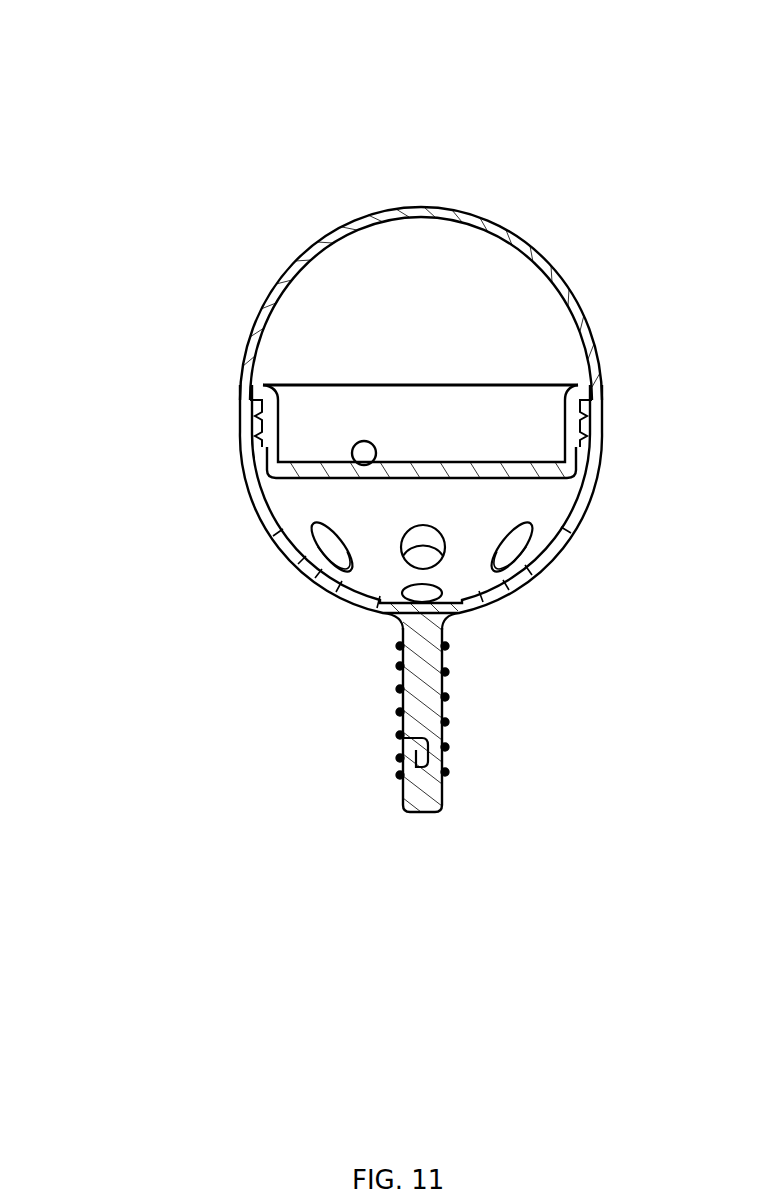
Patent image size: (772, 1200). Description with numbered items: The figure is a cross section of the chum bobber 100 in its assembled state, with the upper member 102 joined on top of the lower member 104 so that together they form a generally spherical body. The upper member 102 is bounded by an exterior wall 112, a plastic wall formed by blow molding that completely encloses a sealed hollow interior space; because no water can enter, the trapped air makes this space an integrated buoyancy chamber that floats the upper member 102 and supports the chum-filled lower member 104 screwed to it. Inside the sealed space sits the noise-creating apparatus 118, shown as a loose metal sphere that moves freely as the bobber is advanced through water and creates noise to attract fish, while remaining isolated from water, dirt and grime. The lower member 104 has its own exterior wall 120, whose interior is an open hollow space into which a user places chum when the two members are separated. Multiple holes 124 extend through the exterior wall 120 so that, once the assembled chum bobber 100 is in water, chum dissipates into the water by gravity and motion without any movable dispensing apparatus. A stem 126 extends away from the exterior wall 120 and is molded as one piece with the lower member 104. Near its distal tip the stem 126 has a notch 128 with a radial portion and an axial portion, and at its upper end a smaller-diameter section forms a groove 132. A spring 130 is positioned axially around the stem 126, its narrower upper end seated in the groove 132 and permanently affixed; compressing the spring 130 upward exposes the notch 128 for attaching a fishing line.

The chum bobber 100 is at (103, 88).
The upper member 102 is at (242, 268).
The lower member 104 is at (176, 649).
The exterior wall 112 is at (458, 207).
The noise-creating apparatus 118 is at (364, 440).
The exterior wall 120 is at (582, 540).
The holes 124 is at (318, 572).
The stem 126 is at (443, 808).
The notch 128 is at (403, 743).
The spring 130 is at (448, 745).
The groove 132 is at (448, 652).